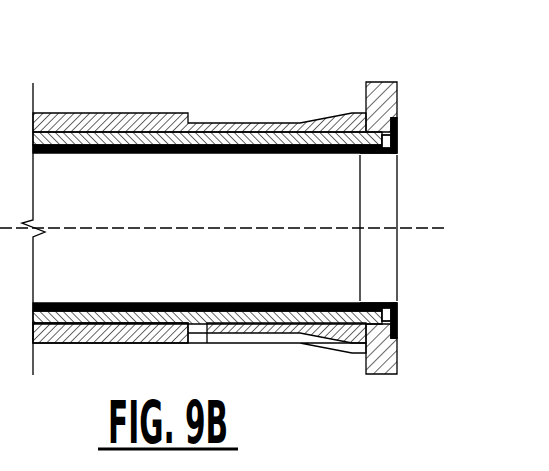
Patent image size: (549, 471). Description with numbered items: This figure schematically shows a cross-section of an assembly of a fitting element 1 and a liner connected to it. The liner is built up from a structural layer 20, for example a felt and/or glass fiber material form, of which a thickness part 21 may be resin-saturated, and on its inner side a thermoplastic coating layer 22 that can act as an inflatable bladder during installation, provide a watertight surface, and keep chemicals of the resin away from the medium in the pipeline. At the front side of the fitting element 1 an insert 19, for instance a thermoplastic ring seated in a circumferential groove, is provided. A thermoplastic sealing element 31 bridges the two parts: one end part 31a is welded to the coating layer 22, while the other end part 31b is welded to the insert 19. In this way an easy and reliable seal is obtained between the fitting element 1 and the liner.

The fitting element 1 is at (238, 195).
The insert 19 is at (407, 111).
The structural layer 20 is at (83, 143).
The thickness part 21 is at (215, 228).
The coating layer 22 is at (238, 150).
The sealing element 31 is at (398, 157).
The end part 31a is at (371, 297).
The end part 31b is at (404, 302).